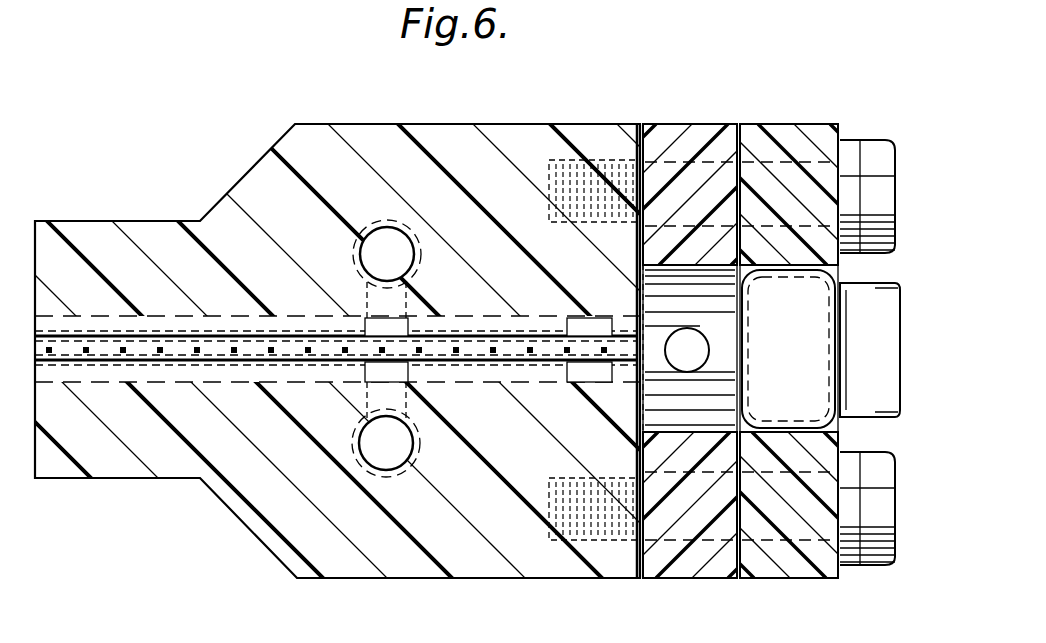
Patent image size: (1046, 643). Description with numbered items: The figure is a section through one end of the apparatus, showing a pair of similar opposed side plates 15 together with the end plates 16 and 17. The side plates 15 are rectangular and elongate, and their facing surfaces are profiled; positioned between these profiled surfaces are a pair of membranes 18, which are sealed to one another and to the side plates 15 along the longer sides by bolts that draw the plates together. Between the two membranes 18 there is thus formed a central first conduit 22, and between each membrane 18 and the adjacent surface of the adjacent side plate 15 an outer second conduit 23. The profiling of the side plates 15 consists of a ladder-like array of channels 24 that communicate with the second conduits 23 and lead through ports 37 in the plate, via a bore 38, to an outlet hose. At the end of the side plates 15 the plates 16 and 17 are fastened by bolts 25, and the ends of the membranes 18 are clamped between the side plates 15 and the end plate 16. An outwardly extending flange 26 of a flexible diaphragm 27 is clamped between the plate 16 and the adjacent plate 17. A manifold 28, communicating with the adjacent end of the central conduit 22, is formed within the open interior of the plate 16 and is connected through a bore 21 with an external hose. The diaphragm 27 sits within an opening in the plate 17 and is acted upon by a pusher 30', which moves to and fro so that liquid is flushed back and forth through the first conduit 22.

The side plate 15 is at (437, 140).
The end plate 16 is at (698, 135).
The end plate 17 is at (778, 135).
The membrane 18 is at (640, 135).
The bore 21 is at (698, 345).
The central first conduit 22 is at (70, 330).
The outer second conduit 23 is at (58, 358).
The channel 24 is at (365, 320).
The bolt 25 is at (872, 567).
The outwardly extending flange 26 is at (728, 528).
The flexible diaphragm 27 is at (803, 430).
The manifold 28 is at (713, 402).
The pusher 30' is at (870, 250).
The port 37 is at (412, 298).
The bore 38 is at (383, 235).